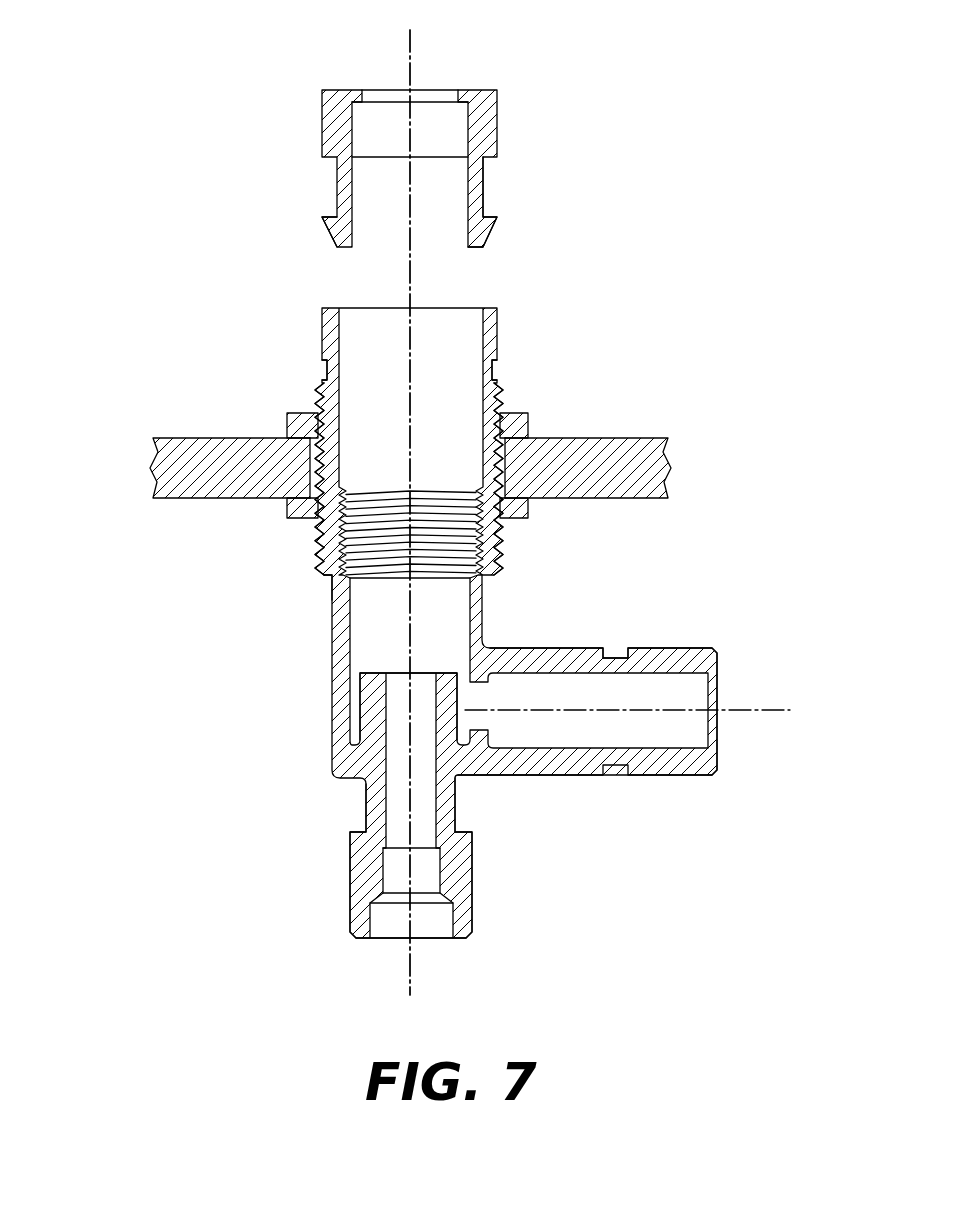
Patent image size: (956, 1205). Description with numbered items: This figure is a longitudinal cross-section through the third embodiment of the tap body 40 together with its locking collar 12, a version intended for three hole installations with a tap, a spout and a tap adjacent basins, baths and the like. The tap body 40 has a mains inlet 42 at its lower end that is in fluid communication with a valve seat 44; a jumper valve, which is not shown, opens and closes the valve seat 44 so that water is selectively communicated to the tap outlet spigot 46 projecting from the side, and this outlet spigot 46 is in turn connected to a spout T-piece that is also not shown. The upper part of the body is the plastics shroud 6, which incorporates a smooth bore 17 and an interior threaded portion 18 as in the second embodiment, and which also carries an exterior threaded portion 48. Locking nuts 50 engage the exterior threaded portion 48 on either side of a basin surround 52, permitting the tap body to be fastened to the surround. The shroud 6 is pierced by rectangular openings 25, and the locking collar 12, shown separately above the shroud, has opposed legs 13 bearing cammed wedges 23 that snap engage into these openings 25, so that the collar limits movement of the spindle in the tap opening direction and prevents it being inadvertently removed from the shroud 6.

The tap body 40 is at (657, 172).
The locking collar 12 is at (500, 102).
The legs 13 is at (478, 195).
The cammed wedges 23 is at (336, 236).
The smooth bore 17 is at (482, 612).
The rectangular openings 25 is at (320, 370).
The exterior threaded portion 48 is at (502, 550).
The interior threaded portion 18 is at (375, 500).
The locking nuts 50 is at (528, 425).
The basin surround 52 is at (170, 465).
The shroud 6 is at (330, 576).
The valve seat 44 is at (382, 673).
The tap outlet spigot 46 is at (700, 729).
The mains inlet 42 is at (402, 922).